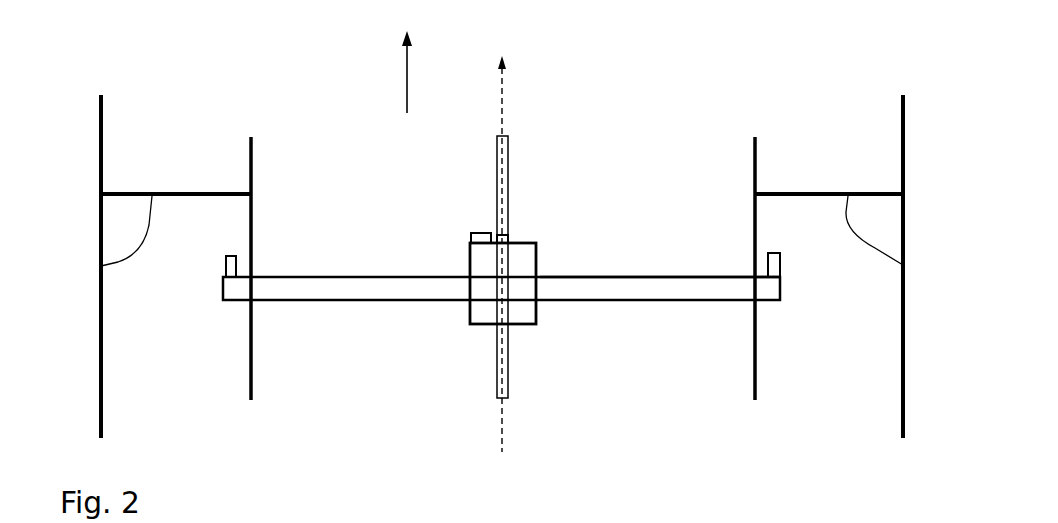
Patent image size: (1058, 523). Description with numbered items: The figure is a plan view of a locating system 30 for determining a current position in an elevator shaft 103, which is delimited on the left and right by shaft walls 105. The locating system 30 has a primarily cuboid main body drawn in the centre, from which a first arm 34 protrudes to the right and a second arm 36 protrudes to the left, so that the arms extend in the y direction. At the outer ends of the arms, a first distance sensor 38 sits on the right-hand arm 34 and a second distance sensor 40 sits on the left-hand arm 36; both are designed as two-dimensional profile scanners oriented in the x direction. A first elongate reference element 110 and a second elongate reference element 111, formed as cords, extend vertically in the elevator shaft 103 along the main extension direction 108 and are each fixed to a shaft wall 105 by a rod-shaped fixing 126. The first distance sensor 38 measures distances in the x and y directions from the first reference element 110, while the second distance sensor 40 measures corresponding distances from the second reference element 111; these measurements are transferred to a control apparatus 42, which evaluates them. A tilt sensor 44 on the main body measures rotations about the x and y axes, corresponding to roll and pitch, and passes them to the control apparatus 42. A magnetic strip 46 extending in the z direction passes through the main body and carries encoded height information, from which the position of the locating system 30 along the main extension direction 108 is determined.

The locating system 30 is at (735, 68).
The first arm 34 is at (610, 274).
The second arm 36 is at (352, 276).
The first distance sensor 38 is at (775, 258).
The second distance sensor 40 is at (226, 256).
The control apparatus 42 is at (479, 233).
The tilt sensor 44 is at (508, 235).
The magnetic strip 46 is at (496, 340).
The elevator shaft 103 is at (692, 93).
The shaft walls 105 is at (100, 112).
The main extension direction 108 is at (407, 76).
The first elongate reference element 110 is at (750, 372).
The second elongate reference element 111 is at (253, 377).
The rod-shaped fixing 126 is at (101, 266).